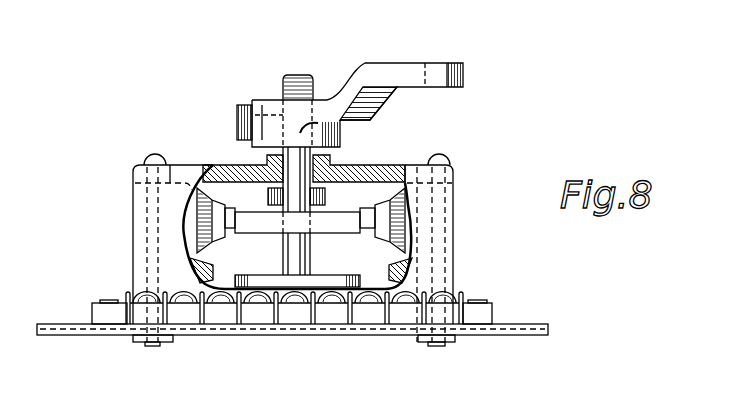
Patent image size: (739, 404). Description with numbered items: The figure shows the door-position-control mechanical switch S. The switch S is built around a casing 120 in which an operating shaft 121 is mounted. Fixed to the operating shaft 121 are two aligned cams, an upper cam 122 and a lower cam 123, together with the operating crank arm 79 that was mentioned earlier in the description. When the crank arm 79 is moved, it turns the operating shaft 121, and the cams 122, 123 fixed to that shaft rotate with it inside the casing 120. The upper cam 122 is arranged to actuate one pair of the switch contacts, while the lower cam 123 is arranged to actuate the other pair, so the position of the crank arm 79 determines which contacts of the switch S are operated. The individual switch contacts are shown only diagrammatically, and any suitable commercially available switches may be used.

The door-position-control mechanical switch S is at (126, 218).
The operating crank arm 79 is at (405, 72).
The casing 120 is at (457, 177).
The operating shaft 121 is at (283, 80).
The upper cam 122 is at (272, 217).
The lower cam 123 is at (280, 278).